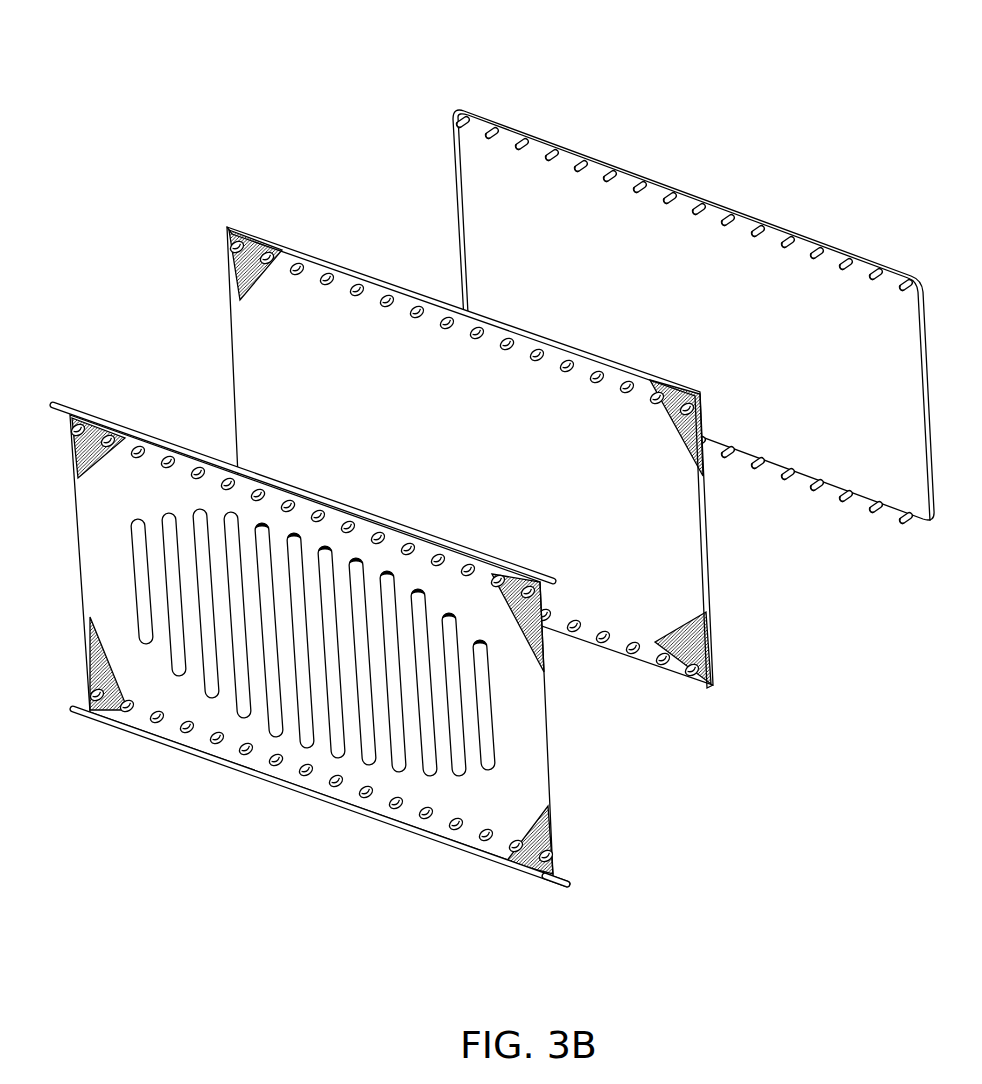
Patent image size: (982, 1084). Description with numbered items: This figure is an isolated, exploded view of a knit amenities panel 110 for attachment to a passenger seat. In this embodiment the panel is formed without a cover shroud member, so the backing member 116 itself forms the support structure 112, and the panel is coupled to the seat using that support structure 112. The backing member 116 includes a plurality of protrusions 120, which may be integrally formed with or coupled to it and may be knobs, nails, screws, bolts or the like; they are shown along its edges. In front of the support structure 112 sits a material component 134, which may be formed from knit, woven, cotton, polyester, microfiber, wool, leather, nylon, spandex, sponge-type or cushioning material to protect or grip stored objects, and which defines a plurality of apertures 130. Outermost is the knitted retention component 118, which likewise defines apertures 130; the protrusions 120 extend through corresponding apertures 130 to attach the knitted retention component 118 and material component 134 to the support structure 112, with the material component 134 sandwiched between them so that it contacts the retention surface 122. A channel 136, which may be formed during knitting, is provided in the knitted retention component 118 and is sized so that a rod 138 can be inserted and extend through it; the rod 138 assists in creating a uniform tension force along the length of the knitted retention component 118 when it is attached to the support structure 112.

The knit amenities panel 110 is at (479, 500).
The support structure 112 is at (693, 274).
The backing member 116 is at (605, 158).
The protrusion 120 is at (758, 225).
The retention surface 122 is at (836, 318).
The material component 134 is at (252, 352).
The aperture 130 is at (652, 400).
The knitted retention component 118 is at (301, 690).
The channel 136 is at (340, 813).
The rod 138 is at (562, 893).